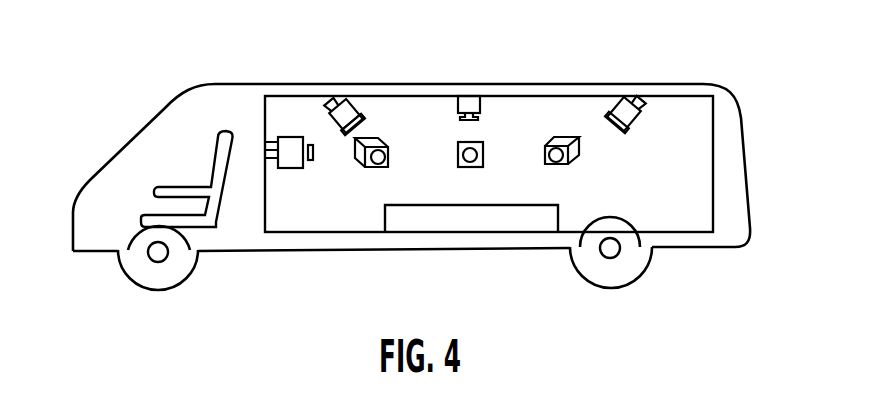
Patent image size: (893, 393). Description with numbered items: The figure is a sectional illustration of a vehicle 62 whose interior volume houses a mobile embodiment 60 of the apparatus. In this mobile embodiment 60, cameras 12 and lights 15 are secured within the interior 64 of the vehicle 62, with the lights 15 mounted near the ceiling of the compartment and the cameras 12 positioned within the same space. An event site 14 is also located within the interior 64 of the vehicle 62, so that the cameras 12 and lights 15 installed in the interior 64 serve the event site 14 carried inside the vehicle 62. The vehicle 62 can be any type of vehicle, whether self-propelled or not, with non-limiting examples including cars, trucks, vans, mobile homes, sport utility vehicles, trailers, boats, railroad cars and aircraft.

The mobile embodiment 60 is at (226, 74).
The vehicle 62 is at (115, 157).
The lights 15 is at (347, 107).
The cameras 12 is at (472, 102).
The interior 64 is at (300, 200).
The event site 14 is at (473, 217).